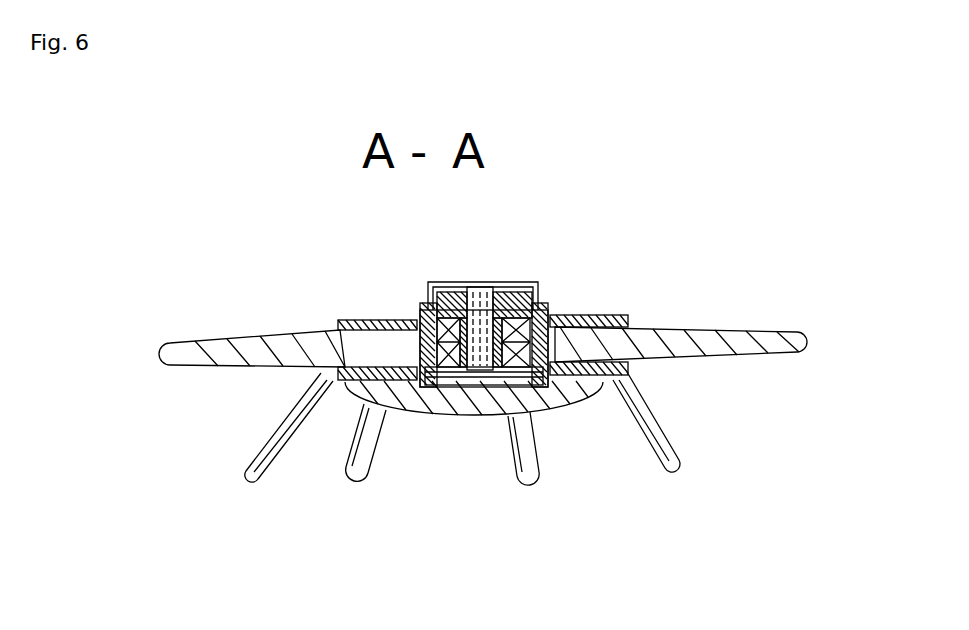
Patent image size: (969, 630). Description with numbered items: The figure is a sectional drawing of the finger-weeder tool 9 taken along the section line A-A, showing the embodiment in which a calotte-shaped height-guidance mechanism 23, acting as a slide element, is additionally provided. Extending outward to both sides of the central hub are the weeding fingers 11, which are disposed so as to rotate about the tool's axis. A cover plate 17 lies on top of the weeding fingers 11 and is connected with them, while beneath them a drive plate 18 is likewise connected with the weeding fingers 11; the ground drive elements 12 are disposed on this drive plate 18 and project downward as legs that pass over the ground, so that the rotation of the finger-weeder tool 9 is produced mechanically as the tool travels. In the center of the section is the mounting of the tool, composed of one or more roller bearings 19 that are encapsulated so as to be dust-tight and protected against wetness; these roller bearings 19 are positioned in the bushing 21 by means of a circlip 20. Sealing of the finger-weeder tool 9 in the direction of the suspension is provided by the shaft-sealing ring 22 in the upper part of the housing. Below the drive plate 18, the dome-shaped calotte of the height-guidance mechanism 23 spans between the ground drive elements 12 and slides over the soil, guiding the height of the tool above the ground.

The finger-weeder tool 9 is at (230, 185).
The weeding fingers 11 is at (203, 345).
The ground drive elements 12 is at (364, 469).
The cover plate 17 is at (607, 322).
The drive plate 18 is at (463, 372).
The roller bearings 19 is at (477, 307).
The circlip 20 is at (583, 380).
The bushing 21 is at (543, 303).
The shaft-sealing ring 22 is at (530, 285).
The calotte-shaped height-guidance mechanism 23 is at (430, 403).